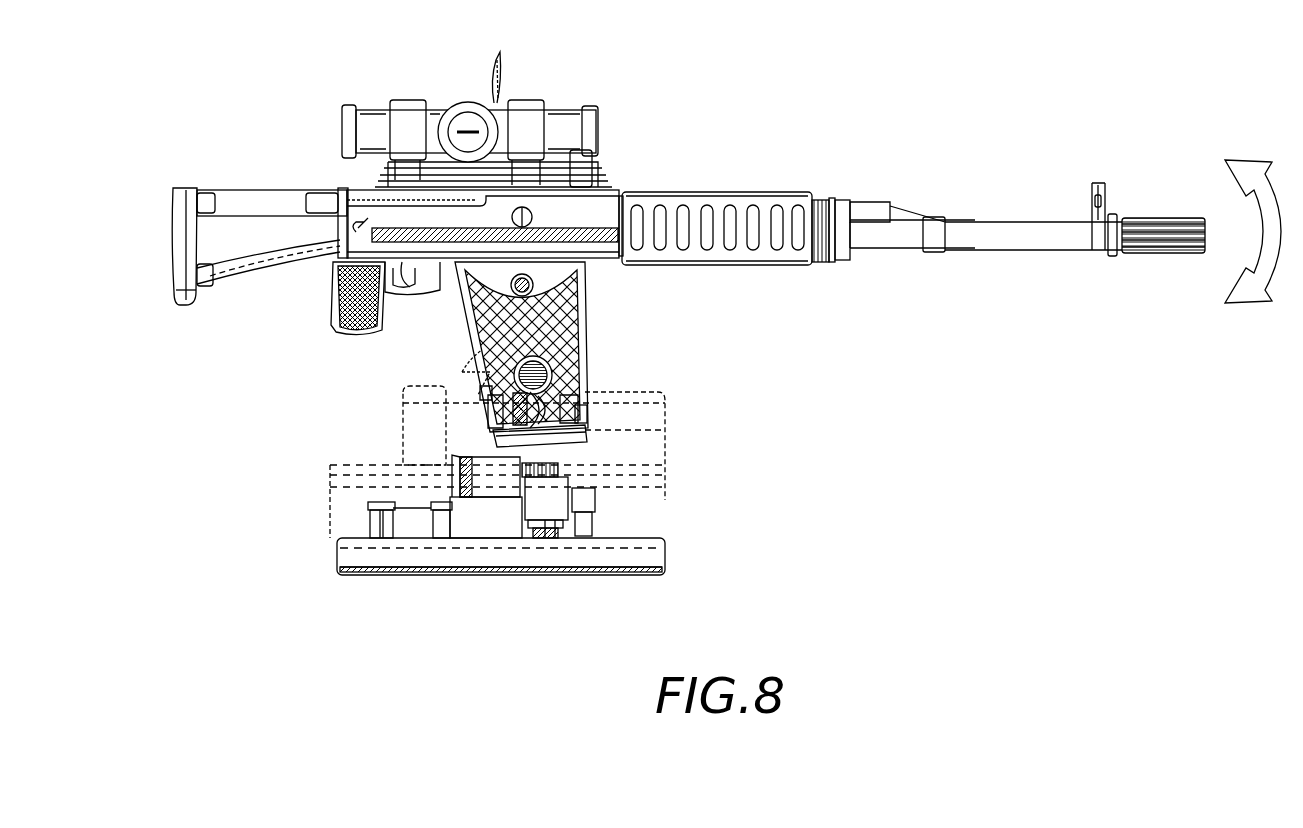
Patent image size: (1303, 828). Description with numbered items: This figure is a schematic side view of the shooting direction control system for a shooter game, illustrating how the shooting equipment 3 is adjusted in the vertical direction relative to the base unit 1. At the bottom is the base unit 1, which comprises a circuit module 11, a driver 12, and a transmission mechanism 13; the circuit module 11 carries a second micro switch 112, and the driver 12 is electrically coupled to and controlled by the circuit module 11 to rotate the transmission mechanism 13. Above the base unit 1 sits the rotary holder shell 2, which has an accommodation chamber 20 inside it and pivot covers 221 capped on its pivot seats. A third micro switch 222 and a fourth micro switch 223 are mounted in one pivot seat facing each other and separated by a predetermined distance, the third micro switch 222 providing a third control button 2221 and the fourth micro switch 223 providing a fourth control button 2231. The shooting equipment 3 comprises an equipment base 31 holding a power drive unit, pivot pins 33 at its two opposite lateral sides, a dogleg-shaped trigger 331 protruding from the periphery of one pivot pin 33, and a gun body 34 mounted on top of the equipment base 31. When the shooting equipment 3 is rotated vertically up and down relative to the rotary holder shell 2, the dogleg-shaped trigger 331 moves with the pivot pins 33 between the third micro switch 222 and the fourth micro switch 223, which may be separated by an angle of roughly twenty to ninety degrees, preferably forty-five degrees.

The base unit 1 is at (456, 553).
The circuit module 11 is at (423, 530).
The second micro switch 112 is at (552, 535).
The driver 12 is at (585, 503).
The transmission mechanism 13 is at (560, 470).
The rotary holder shell 2 is at (420, 445).
The accommodation chamber 20 is at (362, 518).
The pivot cover 221 is at (466, 362).
The third micro switch 222 is at (583, 432).
The third control button 2221 is at (585, 412).
The fourth micro switch 223 is at (515, 409).
The fourth control button 2231 is at (487, 389).
The shooting equipment 3 is at (654, 130).
The equipment base 31 is at (580, 316).
The pivot pin 33 is at (580, 372).
The dogleg-shaped trigger 331 is at (582, 401).
The gun body 34 is at (765, 196).